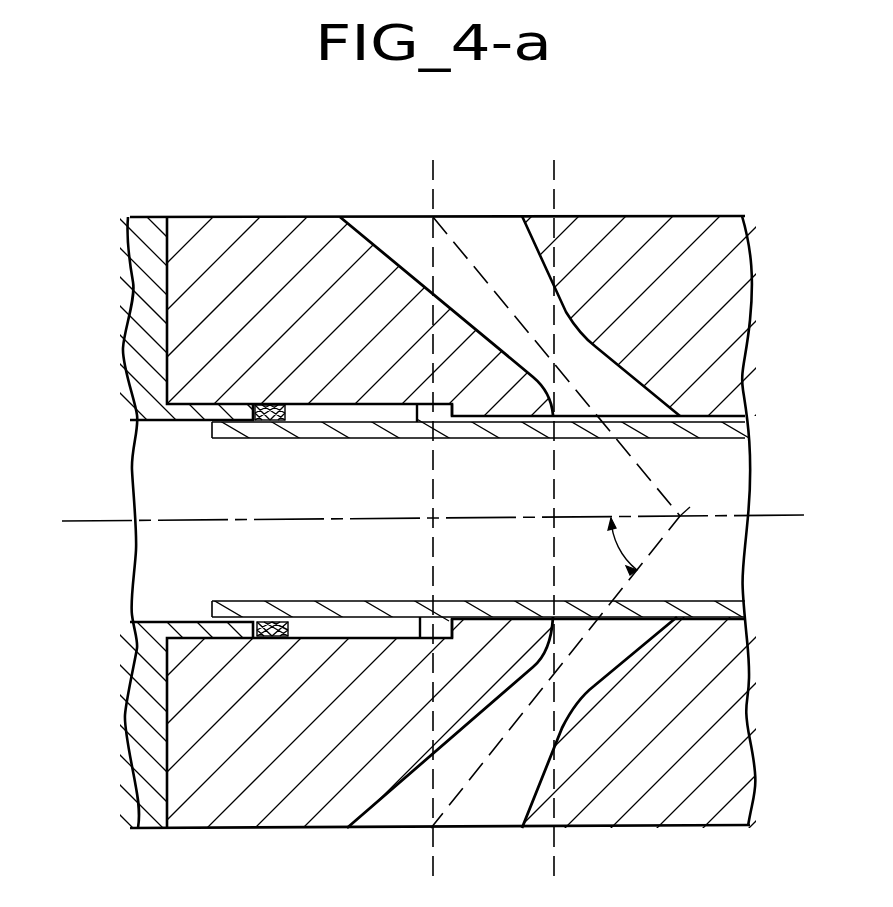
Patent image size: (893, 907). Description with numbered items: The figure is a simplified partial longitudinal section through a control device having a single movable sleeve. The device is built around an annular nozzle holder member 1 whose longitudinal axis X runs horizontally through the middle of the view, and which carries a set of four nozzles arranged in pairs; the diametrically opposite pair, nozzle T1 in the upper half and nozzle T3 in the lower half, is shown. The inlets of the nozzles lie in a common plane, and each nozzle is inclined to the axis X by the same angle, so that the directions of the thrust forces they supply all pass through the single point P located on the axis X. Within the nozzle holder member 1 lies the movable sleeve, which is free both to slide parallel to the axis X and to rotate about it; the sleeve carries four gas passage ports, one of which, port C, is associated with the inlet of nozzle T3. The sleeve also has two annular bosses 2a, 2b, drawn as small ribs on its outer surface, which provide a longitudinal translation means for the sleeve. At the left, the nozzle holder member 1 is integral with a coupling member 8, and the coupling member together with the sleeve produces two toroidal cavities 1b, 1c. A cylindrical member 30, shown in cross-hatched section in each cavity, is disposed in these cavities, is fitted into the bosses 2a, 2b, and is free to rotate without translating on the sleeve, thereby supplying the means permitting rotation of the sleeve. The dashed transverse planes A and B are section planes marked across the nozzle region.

The annular nozzle holder member 1 is at (635, 238).
The coupling member 8 is at (140, 217).
The nozzle T1 is at (391, 228).
The nozzle T3 is at (478, 812).
The gas passage port C is at (660, 600).
The toroidal cavity 1c is at (347, 415).
The toroidal cavity 1b is at (347, 628).
The annular boss 2b is at (436, 412).
The annular boss 2a is at (434, 635).
The cylindrical member 30 is at (272, 421).
The section plane A is at (553, 518).
The section plane B is at (432, 518).
The longitudinal axis X is at (436, 501).
The point P is at (560, 522).